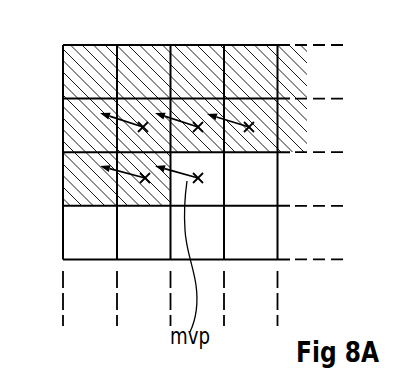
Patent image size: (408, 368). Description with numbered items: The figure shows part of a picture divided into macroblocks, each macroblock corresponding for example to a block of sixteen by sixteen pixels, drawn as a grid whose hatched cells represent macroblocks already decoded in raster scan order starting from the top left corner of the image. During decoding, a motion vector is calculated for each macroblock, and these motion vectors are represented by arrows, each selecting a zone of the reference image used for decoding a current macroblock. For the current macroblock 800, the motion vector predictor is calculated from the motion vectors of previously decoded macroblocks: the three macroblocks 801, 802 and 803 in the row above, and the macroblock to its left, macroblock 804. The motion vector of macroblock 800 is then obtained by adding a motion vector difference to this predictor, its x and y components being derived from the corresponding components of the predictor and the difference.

The current macroblock 800 is at (212, 183).
The previously decoded macroblock 801 is at (138, 113).
The previously decoded macroblock 802 is at (191, 113).
The previously decoded macroblock 803 is at (245, 113).
The left macroblock 804 is at (140, 186).